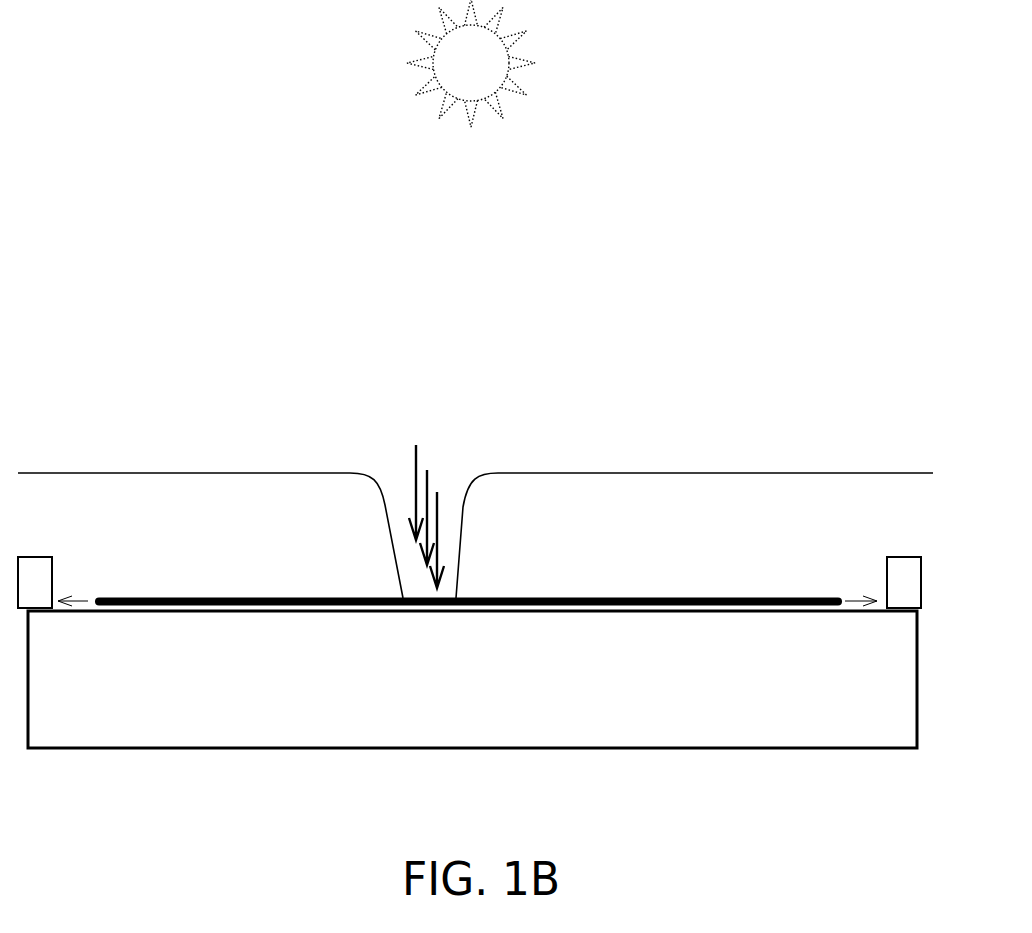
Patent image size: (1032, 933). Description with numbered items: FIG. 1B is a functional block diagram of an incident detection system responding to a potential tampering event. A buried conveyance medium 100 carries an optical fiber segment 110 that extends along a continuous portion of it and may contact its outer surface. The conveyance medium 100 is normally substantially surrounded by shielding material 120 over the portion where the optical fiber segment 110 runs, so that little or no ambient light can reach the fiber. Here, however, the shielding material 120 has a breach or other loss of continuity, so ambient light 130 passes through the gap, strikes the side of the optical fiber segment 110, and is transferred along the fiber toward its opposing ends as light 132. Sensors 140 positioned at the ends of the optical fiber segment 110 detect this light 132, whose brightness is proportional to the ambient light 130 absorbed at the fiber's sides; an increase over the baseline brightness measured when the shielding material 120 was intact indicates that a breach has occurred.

The conveyance medium 100 is at (210, 749).
The optical fiber segment 110 is at (350, 598).
The shielding material 120 is at (145, 478).
The ambient light 130 is at (415, 497).
The light 132 is at (82, 601).
The sensors 140 is at (52, 565).